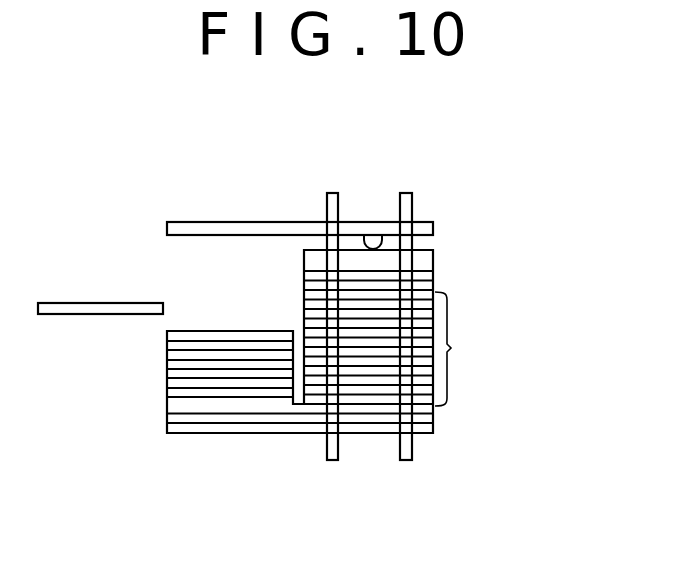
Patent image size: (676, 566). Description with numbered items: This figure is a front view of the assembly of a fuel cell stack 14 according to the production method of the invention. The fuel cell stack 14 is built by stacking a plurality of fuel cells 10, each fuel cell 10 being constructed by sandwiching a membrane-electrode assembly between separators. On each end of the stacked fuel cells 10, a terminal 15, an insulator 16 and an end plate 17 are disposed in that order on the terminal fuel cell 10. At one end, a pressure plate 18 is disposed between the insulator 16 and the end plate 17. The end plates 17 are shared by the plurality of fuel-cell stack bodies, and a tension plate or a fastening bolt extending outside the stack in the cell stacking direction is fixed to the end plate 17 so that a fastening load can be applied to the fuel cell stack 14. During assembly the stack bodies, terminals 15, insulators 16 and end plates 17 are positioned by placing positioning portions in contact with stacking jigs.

The fuel cell 10 is at (215, 324).
The fuel cell stack 14 is at (304, 306).
The terminal 15 is at (435, 284).
The insulator 16 is at (435, 275).
The end plate 17 is at (435, 228).
The pressure plate 18 is at (435, 261).